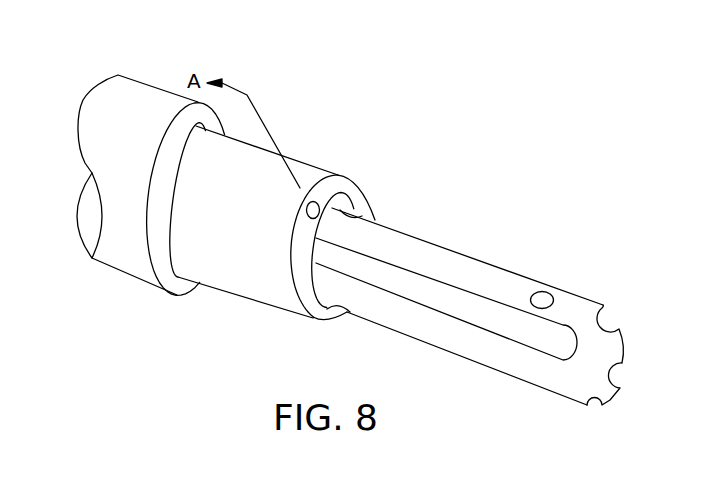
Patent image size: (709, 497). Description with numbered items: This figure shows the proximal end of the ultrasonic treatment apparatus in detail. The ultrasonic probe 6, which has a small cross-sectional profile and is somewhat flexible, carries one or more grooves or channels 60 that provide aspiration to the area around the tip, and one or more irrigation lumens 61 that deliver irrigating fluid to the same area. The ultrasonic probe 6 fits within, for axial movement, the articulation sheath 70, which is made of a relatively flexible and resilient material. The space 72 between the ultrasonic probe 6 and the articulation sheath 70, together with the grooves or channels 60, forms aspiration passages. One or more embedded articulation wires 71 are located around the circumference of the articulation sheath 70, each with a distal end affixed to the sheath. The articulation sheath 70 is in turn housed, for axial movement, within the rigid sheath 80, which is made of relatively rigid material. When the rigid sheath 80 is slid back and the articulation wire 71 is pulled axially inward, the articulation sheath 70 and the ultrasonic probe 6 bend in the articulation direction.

The rigid sheath 80 is at (125, 90).
The articulation sheath 70 is at (322, 173).
The space 72 is at (349, 208).
The articulation wire 71 is at (305, 209).
The ultrasonic probe 6 is at (423, 248).
The grooves or channels 60 is at (447, 297).
The irrigation lumen 61 is at (542, 297).